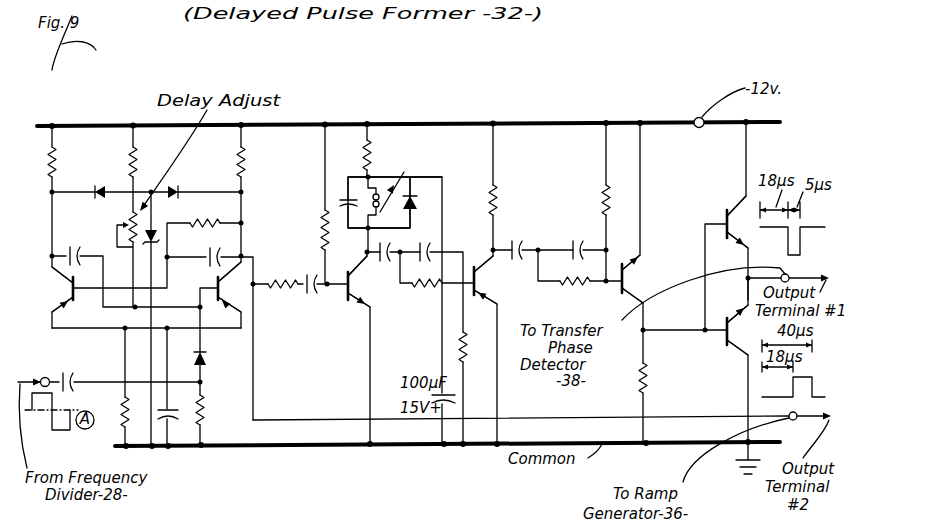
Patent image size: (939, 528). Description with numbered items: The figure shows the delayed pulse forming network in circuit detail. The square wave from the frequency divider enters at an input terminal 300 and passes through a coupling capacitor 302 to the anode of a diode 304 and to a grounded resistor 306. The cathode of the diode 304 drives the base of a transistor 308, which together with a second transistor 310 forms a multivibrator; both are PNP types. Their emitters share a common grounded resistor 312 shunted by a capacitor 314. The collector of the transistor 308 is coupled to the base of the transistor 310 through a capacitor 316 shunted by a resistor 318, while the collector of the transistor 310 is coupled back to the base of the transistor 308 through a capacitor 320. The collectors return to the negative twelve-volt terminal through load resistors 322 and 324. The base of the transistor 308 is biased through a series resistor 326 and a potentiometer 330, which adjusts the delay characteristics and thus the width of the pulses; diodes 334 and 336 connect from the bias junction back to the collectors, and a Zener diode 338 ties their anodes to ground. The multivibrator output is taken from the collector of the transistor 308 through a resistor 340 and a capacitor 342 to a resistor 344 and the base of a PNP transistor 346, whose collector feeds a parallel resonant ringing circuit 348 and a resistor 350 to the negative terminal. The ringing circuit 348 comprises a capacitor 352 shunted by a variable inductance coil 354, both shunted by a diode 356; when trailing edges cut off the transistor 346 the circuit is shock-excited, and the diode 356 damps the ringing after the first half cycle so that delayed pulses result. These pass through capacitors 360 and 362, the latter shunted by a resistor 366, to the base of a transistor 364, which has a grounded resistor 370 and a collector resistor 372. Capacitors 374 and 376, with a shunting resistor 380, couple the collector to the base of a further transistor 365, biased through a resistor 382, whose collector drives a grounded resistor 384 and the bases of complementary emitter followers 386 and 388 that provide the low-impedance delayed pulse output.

The input terminal 300 is at (46, 377).
The coupling capacitor 302 is at (75, 380).
The diode 304 is at (206, 360).
The grounded resistor 306 is at (205, 410).
The transistor 308 is at (208, 288).
The second transistor 310 is at (78, 300).
The common grounded resistor 312 is at (124, 425).
The capacitor 314 is at (172, 420).
The capacitor 316 is at (223, 253).
The resistor 318 is at (225, 222).
The capacitor 320 is at (92, 236).
The resistor 322 is at (238, 175).
The resistor 324 is at (56, 170).
The resistor 326 is at (136, 172).
The potentiometer 330 is at (128, 210).
The diode 334 is at (93, 190).
The diode 336 is at (178, 190).
The Zener diode 338 is at (153, 228).
The resistor 340 is at (300, 288).
The capacitor 342 is at (306, 275).
The resistor 344 is at (322, 228).
The PNP transistor 346 is at (350, 295).
The parallel resonant ringing circuit 348 is at (382, 218).
The resistor 350 is at (372, 152).
The capacitor 352 is at (345, 200).
The variable inductance coil 354 is at (390, 190).
The diode 356 is at (414, 195).
The capacitor 360 is at (378, 252).
The capacitor 362 is at (426, 246).
The transistor 364 is at (478, 296).
The further transistor 365 is at (622, 290).
The resistor 366 is at (425, 285).
The grounded resistor 370 is at (468, 350).
The resistor 372 is at (497, 186).
The capacitor 374 is at (511, 243).
The capacitor 376 is at (572, 243).
The resistor 380 is at (575, 284).
The resistor 382 is at (604, 200).
The grounded resistor 384 is at (640, 382).
The transistor 386 is at (728, 340).
The transistor 388 is at (723, 220).